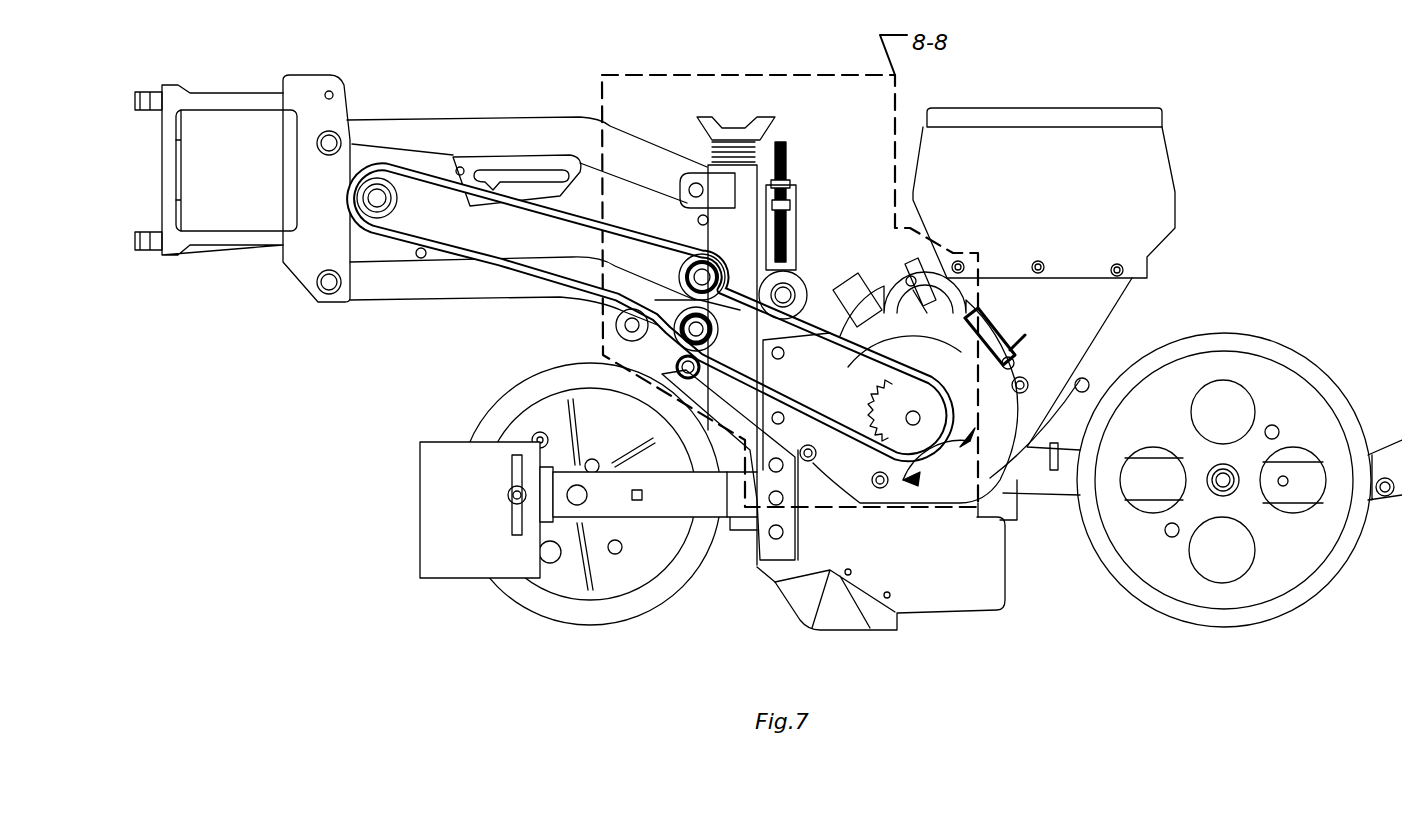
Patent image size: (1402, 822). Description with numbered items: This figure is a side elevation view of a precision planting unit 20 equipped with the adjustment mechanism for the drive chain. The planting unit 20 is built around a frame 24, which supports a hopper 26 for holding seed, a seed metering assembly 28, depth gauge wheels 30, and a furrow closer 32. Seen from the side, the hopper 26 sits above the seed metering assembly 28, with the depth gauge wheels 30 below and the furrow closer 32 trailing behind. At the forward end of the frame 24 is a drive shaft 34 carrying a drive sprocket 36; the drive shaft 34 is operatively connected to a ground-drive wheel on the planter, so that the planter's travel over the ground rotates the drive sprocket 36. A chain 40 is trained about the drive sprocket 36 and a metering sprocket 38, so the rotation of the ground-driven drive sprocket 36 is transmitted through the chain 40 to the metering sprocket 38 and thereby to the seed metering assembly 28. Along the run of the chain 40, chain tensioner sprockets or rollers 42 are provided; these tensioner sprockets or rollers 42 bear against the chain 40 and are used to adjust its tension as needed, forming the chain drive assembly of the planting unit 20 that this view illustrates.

The planting unit 20 is at (1237, 292).
The frame 24 is at (426, 290).
The hopper 26 is at (1160, 178).
The seed metering assembly 28 is at (878, 248).
The depth gauge wheels 30 is at (550, 613).
The furrow closer 32 is at (1270, 605).
The drive shaft 34 is at (355, 193).
The drive sprocket 36 is at (405, 216).
The metering sprocket 38 is at (895, 398).
The chain 40 is at (624, 232).
The chain tensioner sprockets or rollers 42 is at (680, 270).